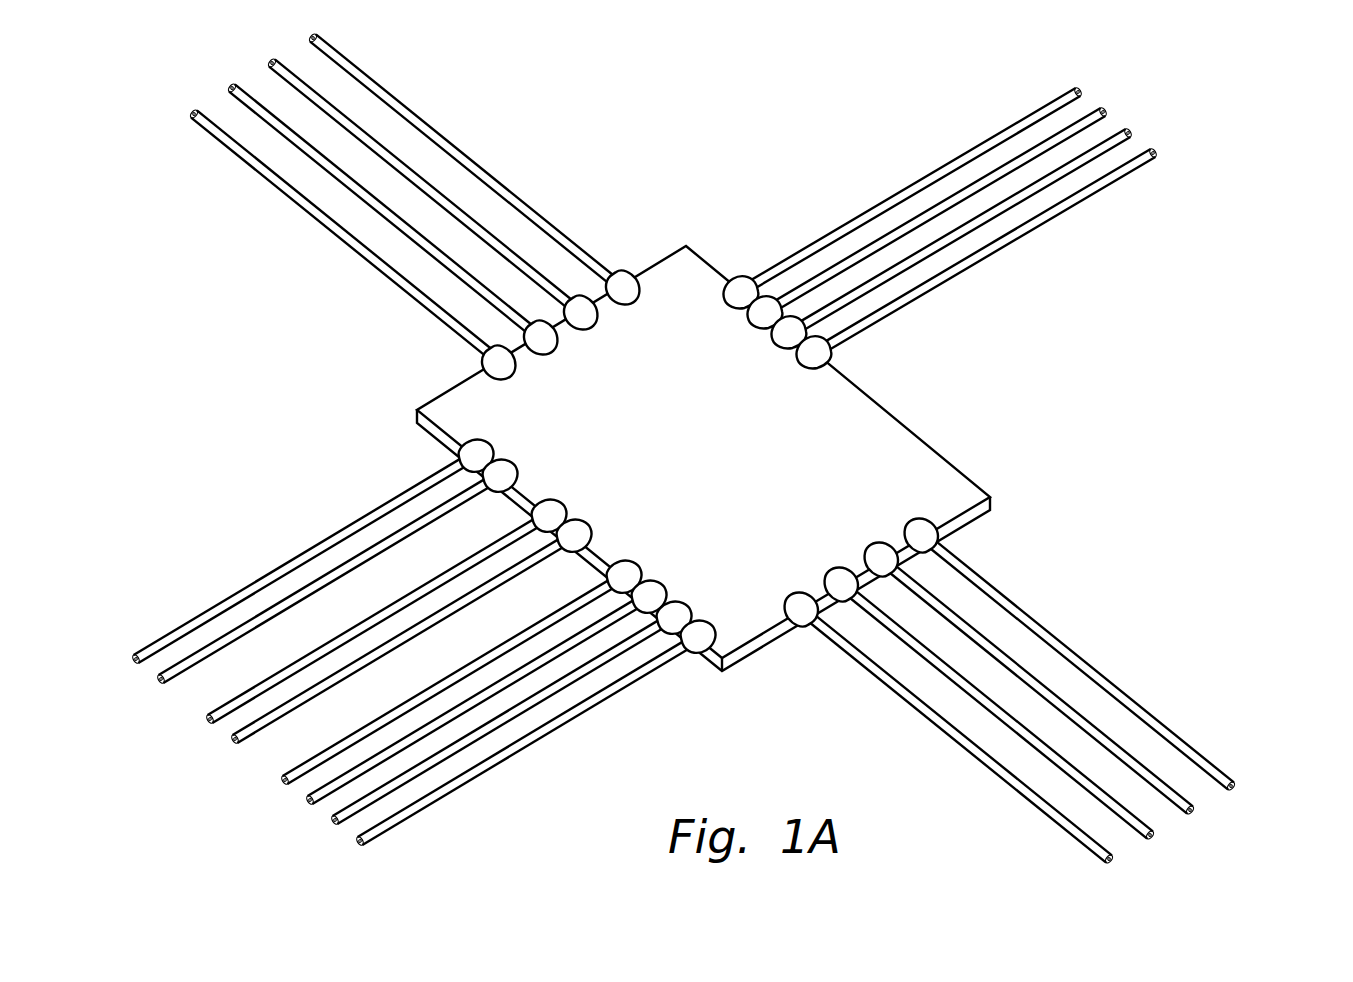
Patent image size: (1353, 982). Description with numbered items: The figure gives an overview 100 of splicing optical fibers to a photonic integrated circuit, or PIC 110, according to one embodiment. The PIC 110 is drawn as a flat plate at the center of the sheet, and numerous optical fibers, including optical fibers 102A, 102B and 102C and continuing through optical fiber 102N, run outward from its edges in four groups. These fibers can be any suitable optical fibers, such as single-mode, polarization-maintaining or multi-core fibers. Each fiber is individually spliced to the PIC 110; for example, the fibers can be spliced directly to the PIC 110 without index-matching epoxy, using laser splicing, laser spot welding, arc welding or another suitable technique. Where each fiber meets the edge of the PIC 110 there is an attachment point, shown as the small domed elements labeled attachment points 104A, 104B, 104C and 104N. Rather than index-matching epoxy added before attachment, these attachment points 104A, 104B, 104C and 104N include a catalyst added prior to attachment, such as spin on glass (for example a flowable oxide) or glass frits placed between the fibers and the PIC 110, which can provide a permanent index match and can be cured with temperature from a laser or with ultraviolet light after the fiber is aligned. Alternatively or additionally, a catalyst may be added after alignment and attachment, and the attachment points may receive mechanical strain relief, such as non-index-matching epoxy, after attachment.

The overview 100 is at (1250, 66).
The PIC 110 is at (940, 413).
The optical fiber 102A is at (356, 846).
The optical fiber 102B is at (332, 824).
The optical fiber 102C is at (306, 804).
The optical fiber 102N is at (1114, 864).
The attachment point 104A is at (706, 629).
The attachment point 104B is at (681, 607).
The attachment point 104C is at (656, 584).
The attachment point 104N is at (795, 597).